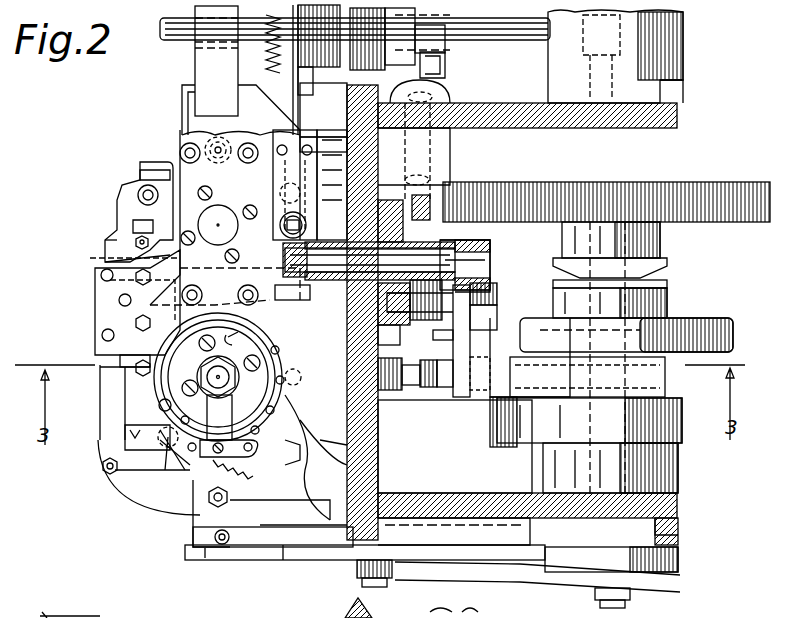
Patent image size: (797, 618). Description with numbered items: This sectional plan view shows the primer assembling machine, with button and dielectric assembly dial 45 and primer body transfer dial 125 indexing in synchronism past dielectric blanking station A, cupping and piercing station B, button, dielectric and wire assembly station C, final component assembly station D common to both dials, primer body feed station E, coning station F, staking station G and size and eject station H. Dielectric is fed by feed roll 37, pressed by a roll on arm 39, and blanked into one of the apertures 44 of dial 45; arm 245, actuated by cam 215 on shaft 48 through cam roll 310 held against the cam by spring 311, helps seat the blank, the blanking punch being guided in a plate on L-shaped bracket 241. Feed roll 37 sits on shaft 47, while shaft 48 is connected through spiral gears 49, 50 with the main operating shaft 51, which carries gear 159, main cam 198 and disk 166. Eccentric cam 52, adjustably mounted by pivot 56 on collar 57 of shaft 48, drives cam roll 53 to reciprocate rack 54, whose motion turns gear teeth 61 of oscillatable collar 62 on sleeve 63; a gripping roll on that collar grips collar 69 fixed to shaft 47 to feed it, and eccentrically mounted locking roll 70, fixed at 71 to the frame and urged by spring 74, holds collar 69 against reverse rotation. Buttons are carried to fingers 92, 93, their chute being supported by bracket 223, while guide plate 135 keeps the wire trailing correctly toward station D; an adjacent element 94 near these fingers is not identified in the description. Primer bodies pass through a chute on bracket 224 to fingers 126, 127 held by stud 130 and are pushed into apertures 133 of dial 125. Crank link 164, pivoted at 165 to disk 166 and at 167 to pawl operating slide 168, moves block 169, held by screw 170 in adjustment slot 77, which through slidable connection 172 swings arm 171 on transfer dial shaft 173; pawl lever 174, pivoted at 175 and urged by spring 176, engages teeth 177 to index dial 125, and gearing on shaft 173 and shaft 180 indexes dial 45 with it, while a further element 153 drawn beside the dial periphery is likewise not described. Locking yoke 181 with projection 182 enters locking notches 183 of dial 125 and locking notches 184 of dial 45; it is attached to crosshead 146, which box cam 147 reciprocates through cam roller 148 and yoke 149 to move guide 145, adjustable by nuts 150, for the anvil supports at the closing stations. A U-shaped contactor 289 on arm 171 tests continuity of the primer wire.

The feed roll 37 is at (370, 261).
The arm 39 is at (300, 300).
The apertures 44 is at (180, 150).
The button and dielectric assembly dial 45 is at (118, 192).
The shaft 47 is at (460, 262).
The shaft 48 is at (515, 28).
The spiral gear 49 is at (683, 35).
The spiral gear 50 is at (600, 60).
The main operating shaft 51 is at (683, 92).
The eccentric cam 52 is at (445, 40).
The cam roll 53 is at (445, 70).
The rack 54 is at (430, 210).
The pivot 56 is at (395, 78).
The collar 57 is at (347, 85).
The gear teeth 61 is at (420, 325).
The oscillatable collar 62 is at (490, 245).
The sleeve 63 is at (490, 284).
The collar 69 is at (472, 259).
The locking roll 70 is at (497, 322).
The frame fixing 71 is at (405, 390).
The spring 74 is at (497, 298).
The elongated adjustment slot 77 is at (268, 510).
The finger 92 is at (133, 226).
The finger 93 is at (138, 200).
The link 94 is at (105, 262).
The transfer dial 125 is at (175, 470).
The finger 126 is at (160, 405).
The finger 127 is at (185, 370).
The stud 130 is at (120, 362).
The apertures 133 is at (125, 430).
The guide plate 135 is at (136, 244).
The guide 145 is at (395, 325).
The crosshead 146 is at (505, 415).
The box cam 147 is at (720, 318).
The cam roller 148 is at (568, 345).
The yoke 149 is at (655, 365).
The nuts 150 is at (520, 405).
The pawl 153 is at (170, 475).
The gear 159 is at (735, 182).
The crank link 164 is at (488, 578).
The pivot 165 is at (625, 605).
The disk 166 is at (678, 570).
The pivot 167 is at (385, 588).
The pawl operating slide 168 is at (288, 560).
The block 169 is at (205, 555).
The screw 170 is at (222, 545).
The swinging arm 171 is at (252, 410).
The slidable connection 172 is at (205, 462).
The transfer dial shaft 173 is at (222, 380).
The pawl lever 174 is at (305, 462).
The pivot 175 is at (200, 520).
The spring 176 is at (303, 517).
The teeth 177 is at (290, 485).
The shaft 180 is at (228, 238).
The locking yoke 181 is at (370, 440).
The projection 182 is at (370, 460).
The locking notches 183 is at (190, 465).
The locking notches 184 is at (260, 130).
The main cam 198 is at (682, 430).
The cam 215 is at (324, 50).
The bracket 223 is at (140, 168).
The bracket 224 is at (110, 452).
The L-shaped bracket 241 is at (417, 150).
The arm 245 is at (320, 120).
The U-shaped contactor 289 is at (278, 405).
The cam roll 310 is at (238, 14).
The spring 311 is at (262, 70).
The blanking station A is at (284, 209).
The cupping and piercing station B is at (200, 136).
The button, dielectric and wire assembly station C is at (105, 235).
The final component assembly station D is at (204, 307).
The primer body feed station E is at (115, 381).
The coning station F is at (258, 348).
The staking station G is at (335, 490).
The size and eject station H is at (160, 455).